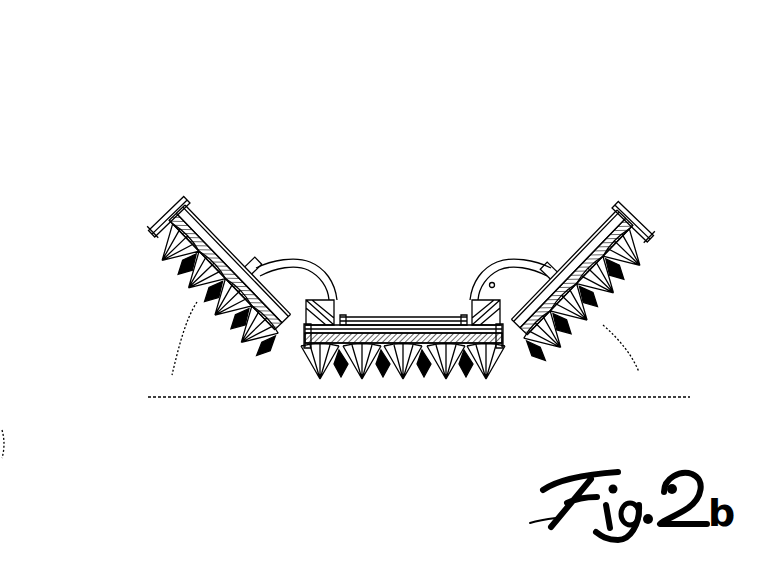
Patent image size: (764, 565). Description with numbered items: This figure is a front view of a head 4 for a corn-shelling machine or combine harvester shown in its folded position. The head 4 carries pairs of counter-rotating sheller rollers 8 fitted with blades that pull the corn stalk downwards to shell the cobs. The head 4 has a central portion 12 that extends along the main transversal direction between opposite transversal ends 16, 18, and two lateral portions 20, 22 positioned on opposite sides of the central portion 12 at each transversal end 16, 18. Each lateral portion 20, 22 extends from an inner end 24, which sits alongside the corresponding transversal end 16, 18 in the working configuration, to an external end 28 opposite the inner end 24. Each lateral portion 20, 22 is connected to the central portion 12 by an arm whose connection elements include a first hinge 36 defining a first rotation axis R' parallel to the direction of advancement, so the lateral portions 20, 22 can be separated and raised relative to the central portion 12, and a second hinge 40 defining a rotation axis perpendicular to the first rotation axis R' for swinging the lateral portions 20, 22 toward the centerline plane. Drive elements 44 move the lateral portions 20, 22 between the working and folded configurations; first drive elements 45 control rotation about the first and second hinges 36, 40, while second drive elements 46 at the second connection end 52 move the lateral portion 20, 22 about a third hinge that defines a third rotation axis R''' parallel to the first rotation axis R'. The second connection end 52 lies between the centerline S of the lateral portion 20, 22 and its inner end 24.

The head 4 is at (375, 124).
The sheller rollers 8 is at (390, 375).
The central portion 12 is at (391, 246).
The transversal end 16 is at (299, 352).
The transversal end 18 is at (509, 344).
The lateral portion 20 is at (199, 197).
The lateral portion 22 is at (607, 196).
The inner end 24 is at (258, 366).
The external end 28 is at (146, 225).
The first hinge 36 is at (343, 301).
The second hinge 40 is at (184, 564).
The drive elements 44 is at (487, 263).
The first drive elements 45 is at (492, 285).
The second drive elements 46 is at (267, 254).
The second connection end 52 is at (248, 246).
The third rotation axis R''' is at (310, 221).
The first rotation axis R' is at (350, 245).
The centerline S is at (640, 321).